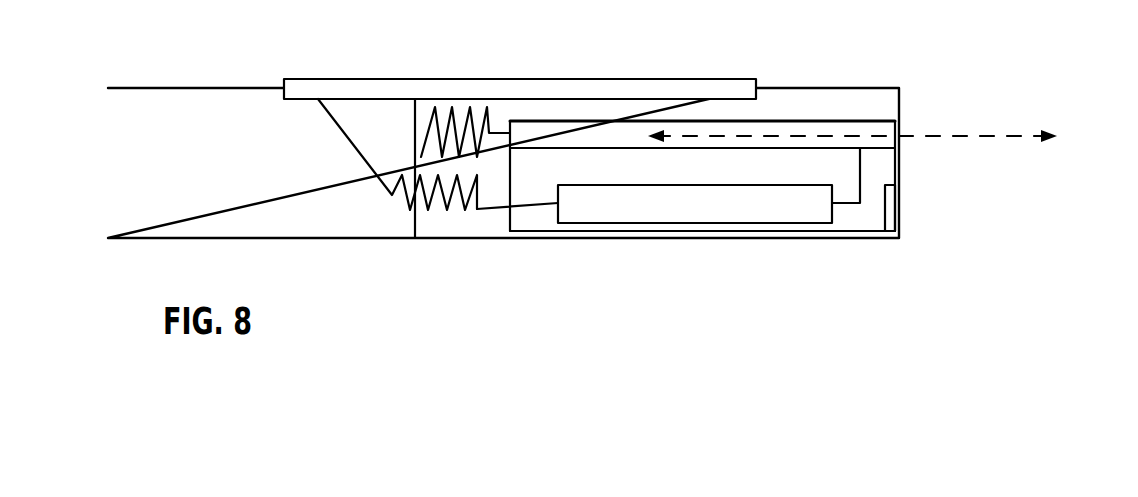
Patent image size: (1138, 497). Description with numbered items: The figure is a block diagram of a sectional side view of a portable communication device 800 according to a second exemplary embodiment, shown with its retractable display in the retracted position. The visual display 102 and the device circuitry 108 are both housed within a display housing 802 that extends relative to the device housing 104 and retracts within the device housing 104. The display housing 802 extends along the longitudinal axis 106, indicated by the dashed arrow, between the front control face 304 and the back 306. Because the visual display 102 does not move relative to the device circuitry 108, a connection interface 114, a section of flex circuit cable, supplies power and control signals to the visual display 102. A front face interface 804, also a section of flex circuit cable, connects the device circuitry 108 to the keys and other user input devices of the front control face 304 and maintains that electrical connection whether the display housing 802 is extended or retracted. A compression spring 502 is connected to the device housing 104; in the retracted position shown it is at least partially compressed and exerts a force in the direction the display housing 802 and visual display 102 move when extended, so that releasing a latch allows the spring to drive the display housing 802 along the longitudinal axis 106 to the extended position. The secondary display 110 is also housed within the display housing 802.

The portable communication device 800 is at (134, 46).
The front control face 304 is at (642, 79).
The visual display 102 is at (800, 121).
The device housing 104 is at (700, 239).
The longitudinal axis 106 is at (922, 133).
The device circuitry 108 is at (710, 214).
The secondary display 110 is at (898, 214).
The connection interface 114 is at (860, 173).
The compression spring 502 is at (413, 139).
The display housing 802 is at (798, 232).
The front face interface 804 is at (385, 228).
The back 306 is at (624, 276).